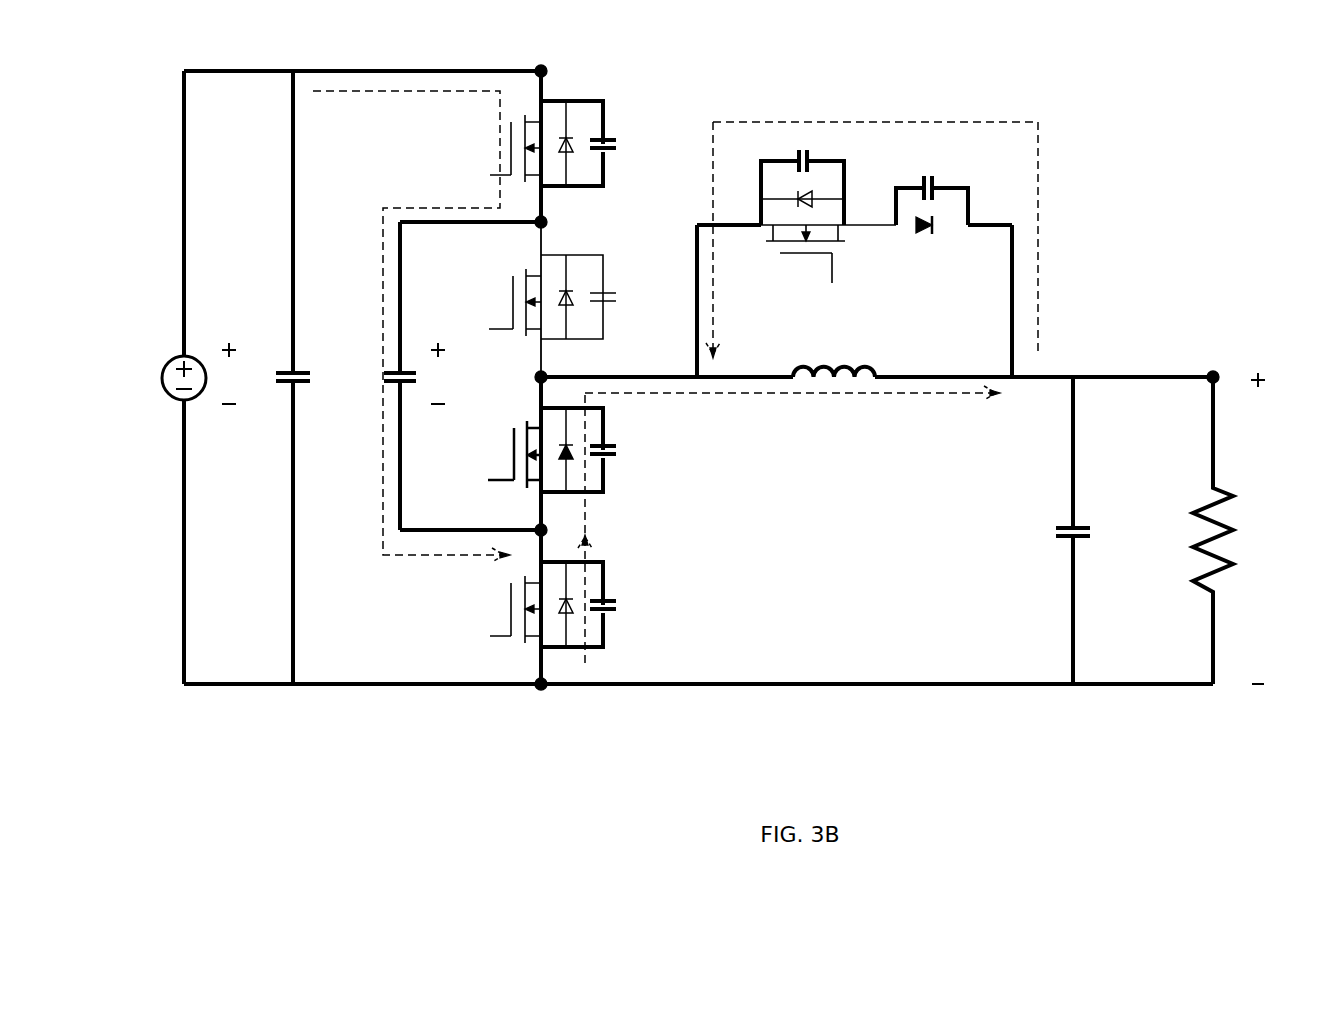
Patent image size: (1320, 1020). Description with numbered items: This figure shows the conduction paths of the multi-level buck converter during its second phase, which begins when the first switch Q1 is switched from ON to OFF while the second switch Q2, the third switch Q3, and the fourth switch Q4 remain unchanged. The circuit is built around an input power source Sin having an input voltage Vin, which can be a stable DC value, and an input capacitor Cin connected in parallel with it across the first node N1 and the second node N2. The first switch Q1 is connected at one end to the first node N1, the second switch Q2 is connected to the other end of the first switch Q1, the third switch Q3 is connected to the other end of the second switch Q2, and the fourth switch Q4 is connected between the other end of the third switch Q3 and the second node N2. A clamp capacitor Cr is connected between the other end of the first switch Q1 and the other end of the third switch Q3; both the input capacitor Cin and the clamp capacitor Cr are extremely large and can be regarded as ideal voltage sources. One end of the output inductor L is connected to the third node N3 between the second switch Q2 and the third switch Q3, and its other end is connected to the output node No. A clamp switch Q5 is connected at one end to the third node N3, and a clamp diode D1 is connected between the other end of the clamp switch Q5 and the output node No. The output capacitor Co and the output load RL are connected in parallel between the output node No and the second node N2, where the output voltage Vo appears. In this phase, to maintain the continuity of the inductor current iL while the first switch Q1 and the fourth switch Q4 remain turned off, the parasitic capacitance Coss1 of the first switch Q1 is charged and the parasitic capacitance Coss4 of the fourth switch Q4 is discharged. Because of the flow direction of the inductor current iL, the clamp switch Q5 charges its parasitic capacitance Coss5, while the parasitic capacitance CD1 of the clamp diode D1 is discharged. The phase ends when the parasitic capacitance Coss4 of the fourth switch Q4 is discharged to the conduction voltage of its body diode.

The input power source Sin is at (162, 378).
The input voltage Vin is at (234, 373).
The input capacitor Cin is at (307, 377).
The clamp capacitor Cr is at (448, 376).
The first node N1 is at (541, 53).
The second node N2 is at (541, 704).
The third node N3 is at (524, 362).
The output node No is at (1227, 361).
The first switch Q1 is at (528, 143).
The second switch Q2 is at (535, 297).
The third switch Q3 is at (535, 450).
The fourth switch Q4 is at (528, 604).
The clamp switch Q5 is at (828, 242).
The parasitic capacitance of the first switch Coss1 is at (636, 127).
The parasitic capacitance of the fourth switch Coss4 is at (640, 607).
The parasitic capacitance of the clamp switch Coss5 is at (821, 180).
The parasitic capacitance of the clamp diode CD1 is at (943, 191).
The clamp diode D1 is at (924, 242).
The output inductor L is at (834, 356).
The inductor current iL is at (792, 407).
The output capacitor Co is at (1055, 530).
The output load RL is at (1192, 530).
The output voltage Vo is at (1267, 528).